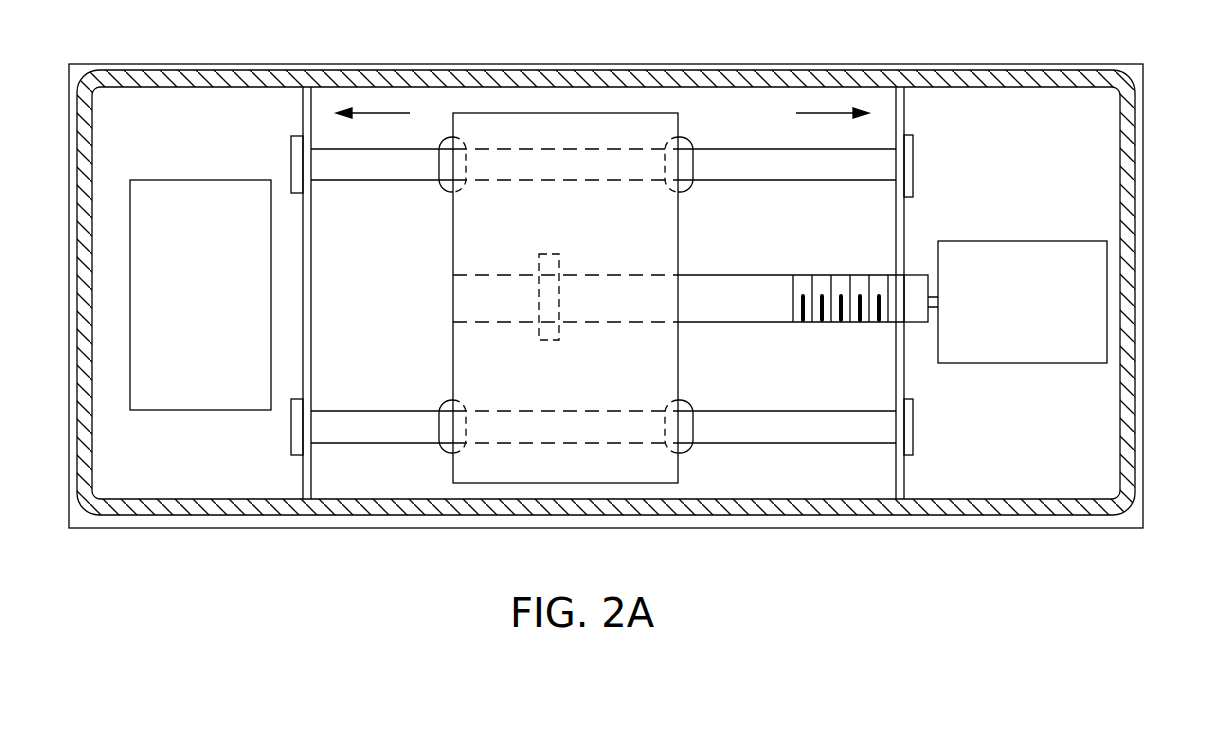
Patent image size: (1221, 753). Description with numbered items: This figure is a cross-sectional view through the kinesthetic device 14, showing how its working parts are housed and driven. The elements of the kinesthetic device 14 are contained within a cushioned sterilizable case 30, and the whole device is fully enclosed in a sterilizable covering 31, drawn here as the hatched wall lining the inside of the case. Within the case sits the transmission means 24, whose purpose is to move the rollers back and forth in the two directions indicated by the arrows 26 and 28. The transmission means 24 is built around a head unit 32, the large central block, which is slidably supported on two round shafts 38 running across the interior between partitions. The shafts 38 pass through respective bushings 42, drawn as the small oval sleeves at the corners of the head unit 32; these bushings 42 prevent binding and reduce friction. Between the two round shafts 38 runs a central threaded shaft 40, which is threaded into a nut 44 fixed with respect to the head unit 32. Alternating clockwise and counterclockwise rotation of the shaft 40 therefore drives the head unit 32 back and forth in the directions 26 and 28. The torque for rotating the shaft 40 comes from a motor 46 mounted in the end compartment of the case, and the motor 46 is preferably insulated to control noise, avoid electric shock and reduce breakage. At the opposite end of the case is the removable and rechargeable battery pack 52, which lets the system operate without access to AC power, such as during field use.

The kinesthetic device 14 is at (1042, 178).
The transmission means 24 is at (840, 380).
The direction arrow 26 is at (381, 116).
The direction arrow 28 is at (820, 116).
The cushioned sterilizable case 30 is at (1133, 421).
The sterilizable covering 31 is at (1058, 64).
The head unit 32 is at (634, 236).
The round shafts 38 is at (790, 182).
The central threaded shaft 40 is at (726, 275).
The bushings 42 is at (439, 165).
The nut 44 is at (559, 302).
The motor 46 is at (1042, 315).
The removable/rechargeable battery pack 52 is at (217, 308).